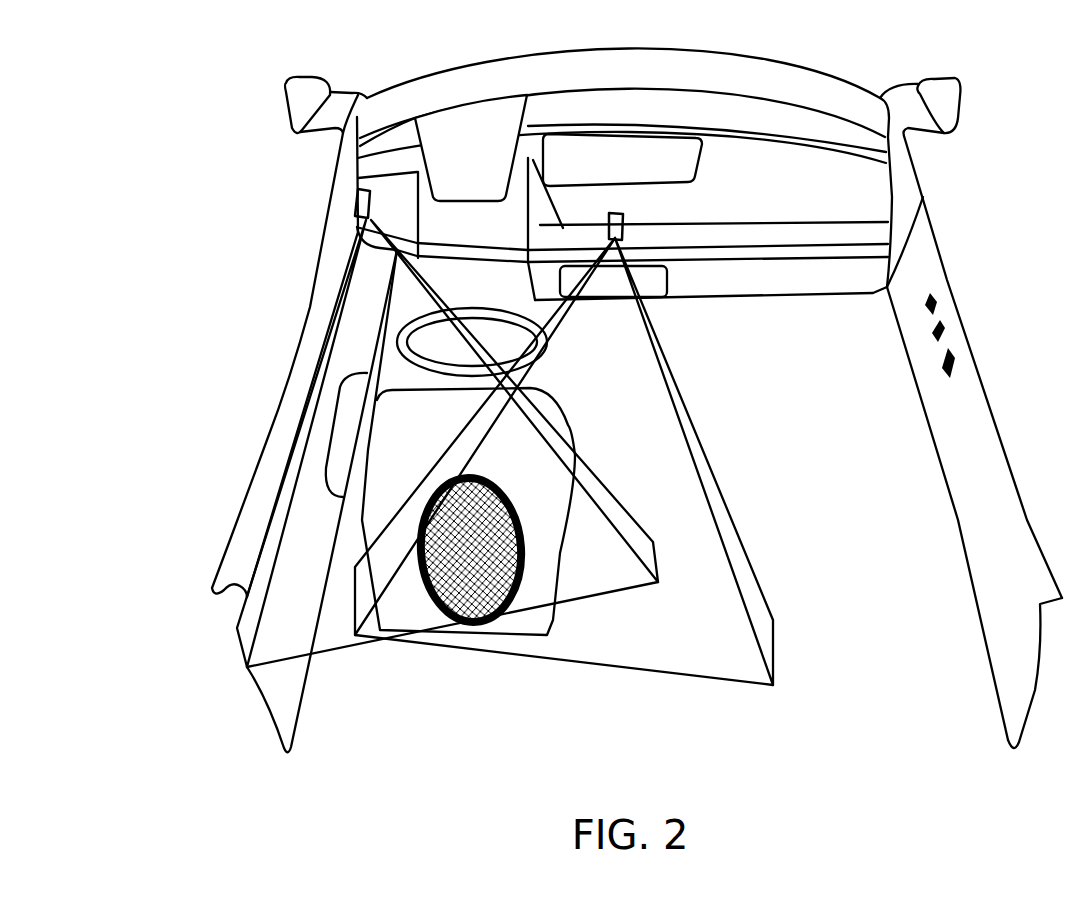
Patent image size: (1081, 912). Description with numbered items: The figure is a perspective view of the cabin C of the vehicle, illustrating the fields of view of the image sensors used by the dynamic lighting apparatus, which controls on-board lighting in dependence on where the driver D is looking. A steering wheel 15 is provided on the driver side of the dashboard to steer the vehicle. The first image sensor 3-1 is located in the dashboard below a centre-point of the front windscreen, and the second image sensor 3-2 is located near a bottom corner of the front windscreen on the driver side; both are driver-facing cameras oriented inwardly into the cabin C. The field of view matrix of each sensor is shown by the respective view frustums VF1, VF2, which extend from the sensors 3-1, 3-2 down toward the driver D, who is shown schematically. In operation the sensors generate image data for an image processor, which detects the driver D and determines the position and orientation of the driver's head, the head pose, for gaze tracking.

The cabin C is at (981, 124).
The first image sensor 3-1 is at (619, 212).
The second image sensor 3-2 is at (357, 193).
The steering wheel 15 is at (400, 341).
The view frustum VF1 is at (668, 462).
The view frustum VF2 is at (317, 522).
The driver D is at (486, 592).